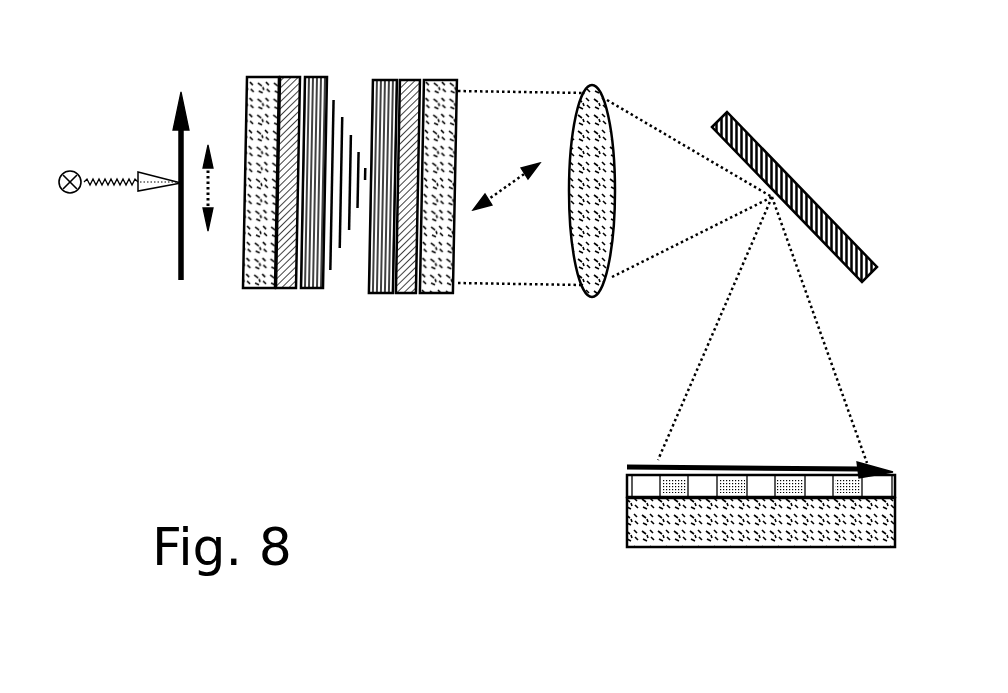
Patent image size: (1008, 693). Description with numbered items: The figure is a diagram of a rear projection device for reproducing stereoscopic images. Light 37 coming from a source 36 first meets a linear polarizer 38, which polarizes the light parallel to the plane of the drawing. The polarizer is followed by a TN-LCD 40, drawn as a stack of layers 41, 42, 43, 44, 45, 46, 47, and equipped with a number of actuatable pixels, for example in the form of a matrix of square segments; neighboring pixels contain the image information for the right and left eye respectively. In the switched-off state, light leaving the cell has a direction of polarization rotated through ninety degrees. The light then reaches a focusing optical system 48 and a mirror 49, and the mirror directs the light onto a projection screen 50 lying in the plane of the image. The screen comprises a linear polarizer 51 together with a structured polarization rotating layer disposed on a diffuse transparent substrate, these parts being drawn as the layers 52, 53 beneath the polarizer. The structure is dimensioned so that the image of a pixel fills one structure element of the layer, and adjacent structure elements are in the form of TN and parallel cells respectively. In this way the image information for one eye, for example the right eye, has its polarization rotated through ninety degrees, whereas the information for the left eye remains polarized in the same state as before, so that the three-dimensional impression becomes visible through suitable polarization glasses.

The source 36 is at (66, 193).
The light 37 is at (148, 175).
The linear polarizer 38 is at (180, 148).
The TN-LCD 40 is at (376, 226).
The first glass substrate 41 is at (249, 76).
The first polarizer layer 42 is at (287, 289).
The first electrode layer 43 is at (322, 76).
The liquid crystal lens elements 44 is at (334, 100).
The second electrode layer 45 is at (378, 294).
The second polarizer layer 46 is at (405, 295).
The second glass substrate 47 is at (453, 292).
The focusing optical system 48 is at (597, 86).
The mirror 49 is at (735, 120).
The projection screen 50 is at (655, 564).
The linear polarizer 51 is at (623, 467).
The photodetector array 52 is at (628, 490).
The detector substrate 53 is at (683, 537).